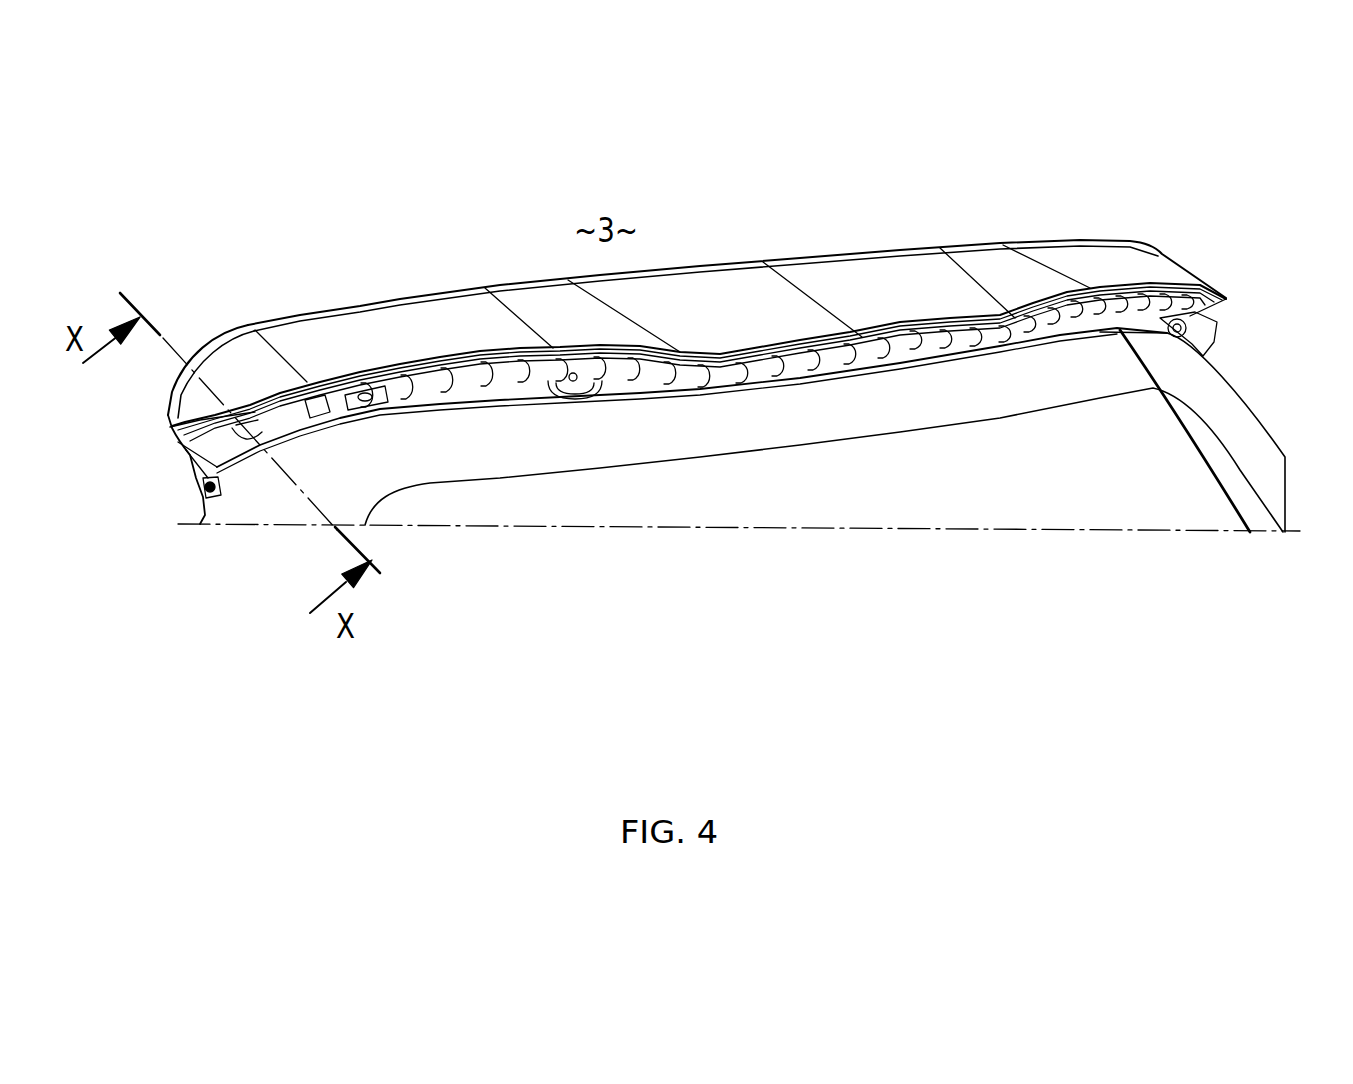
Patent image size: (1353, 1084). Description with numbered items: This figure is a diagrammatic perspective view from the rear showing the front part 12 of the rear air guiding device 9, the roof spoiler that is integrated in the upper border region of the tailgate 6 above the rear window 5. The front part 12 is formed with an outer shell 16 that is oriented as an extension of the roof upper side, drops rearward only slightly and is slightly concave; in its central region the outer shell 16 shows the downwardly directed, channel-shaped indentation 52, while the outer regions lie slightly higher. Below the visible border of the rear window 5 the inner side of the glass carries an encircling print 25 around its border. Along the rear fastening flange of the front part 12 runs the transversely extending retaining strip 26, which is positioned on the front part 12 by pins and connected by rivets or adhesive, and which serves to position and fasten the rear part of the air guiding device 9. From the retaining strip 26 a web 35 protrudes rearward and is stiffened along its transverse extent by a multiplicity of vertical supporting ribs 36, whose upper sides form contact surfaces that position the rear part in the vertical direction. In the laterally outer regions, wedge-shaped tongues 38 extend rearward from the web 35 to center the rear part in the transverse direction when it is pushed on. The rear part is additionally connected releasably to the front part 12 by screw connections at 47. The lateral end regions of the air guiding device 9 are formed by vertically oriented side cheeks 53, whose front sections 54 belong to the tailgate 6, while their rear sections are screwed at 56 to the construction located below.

The rear window 5 is at (980, 502).
The tailgate 6 is at (1250, 390).
The rear air guiding device 9 is at (1194, 262).
The front part 12 is at (851, 254).
The outer shell 16 is at (390, 323).
The encircling print 25 is at (474, 442).
The retaining strip 26 is at (753, 377).
The web 35 is at (512, 376).
The supporting ribs 36 is at (365, 400).
The tongues 38 is at (318, 408).
The screw connections 47 is at (210, 487).
The channel-shaped indentation 52 is at (732, 297).
The side cheeks 53 is at (165, 453).
The front sections 54 is at (192, 403).
The screw fastening location 56 is at (245, 435).